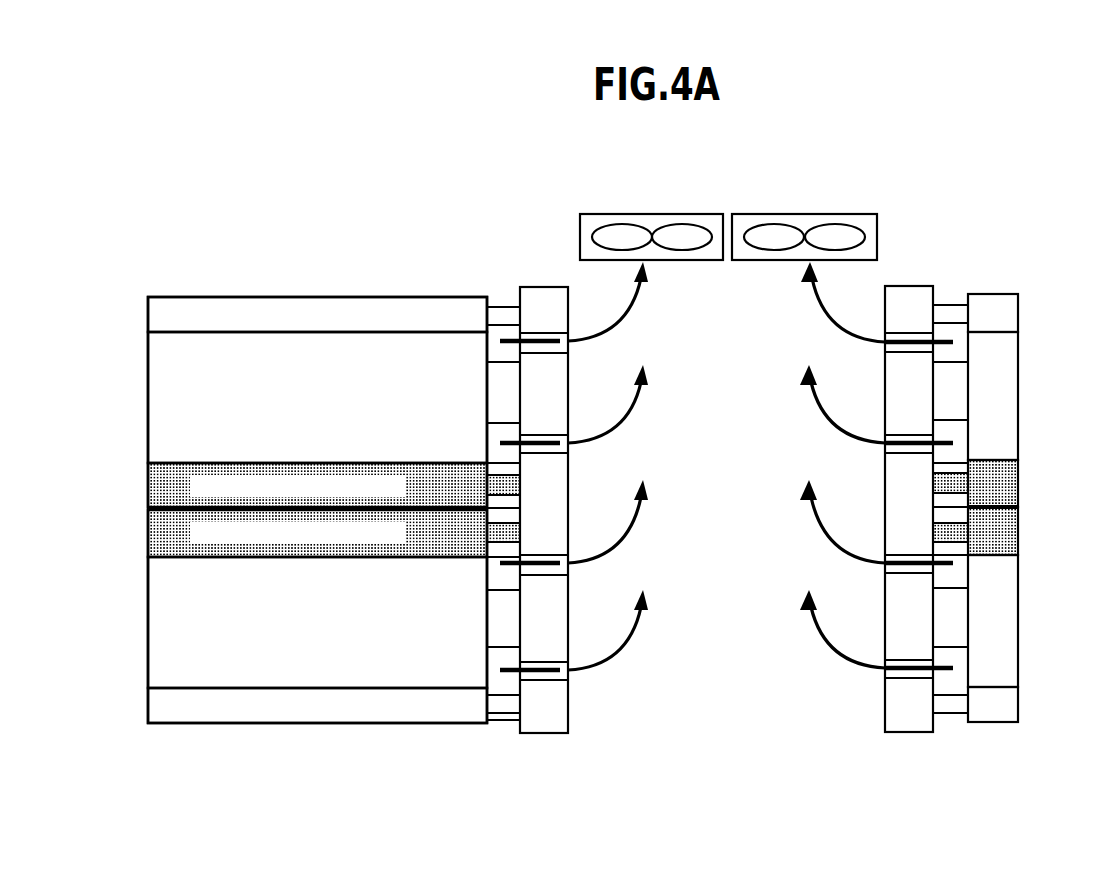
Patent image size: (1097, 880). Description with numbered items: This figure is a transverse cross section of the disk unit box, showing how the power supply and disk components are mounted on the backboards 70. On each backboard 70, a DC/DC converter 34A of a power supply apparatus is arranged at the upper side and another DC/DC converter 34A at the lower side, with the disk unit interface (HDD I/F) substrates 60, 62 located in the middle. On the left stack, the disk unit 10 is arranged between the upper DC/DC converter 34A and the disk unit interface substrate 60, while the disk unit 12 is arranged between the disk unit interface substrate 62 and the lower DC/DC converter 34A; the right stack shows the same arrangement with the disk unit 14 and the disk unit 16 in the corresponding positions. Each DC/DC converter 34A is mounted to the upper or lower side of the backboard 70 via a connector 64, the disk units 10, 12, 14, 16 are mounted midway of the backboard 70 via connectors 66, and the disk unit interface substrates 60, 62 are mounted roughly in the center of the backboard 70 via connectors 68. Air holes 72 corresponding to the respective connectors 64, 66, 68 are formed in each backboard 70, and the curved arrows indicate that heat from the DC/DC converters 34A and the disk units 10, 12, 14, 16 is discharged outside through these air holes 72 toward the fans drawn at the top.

The disk unit 10 is at (420, 400).
The disk unit 12 is at (420, 625).
The disk unit 14 is at (1006, 412).
The disk unit 16 is at (1006, 633).
The DC/DC converter 34A is at (385, 300).
The disk unit interface substrate 60 is at (148, 489).
The disk unit interface substrate 62 is at (148, 529).
The connector 64 is at (502, 308).
The connector 66 is at (505, 386).
The connector 68 is at (502, 480).
The backboard 70 is at (543, 287).
The air hole 72 is at (568, 333).